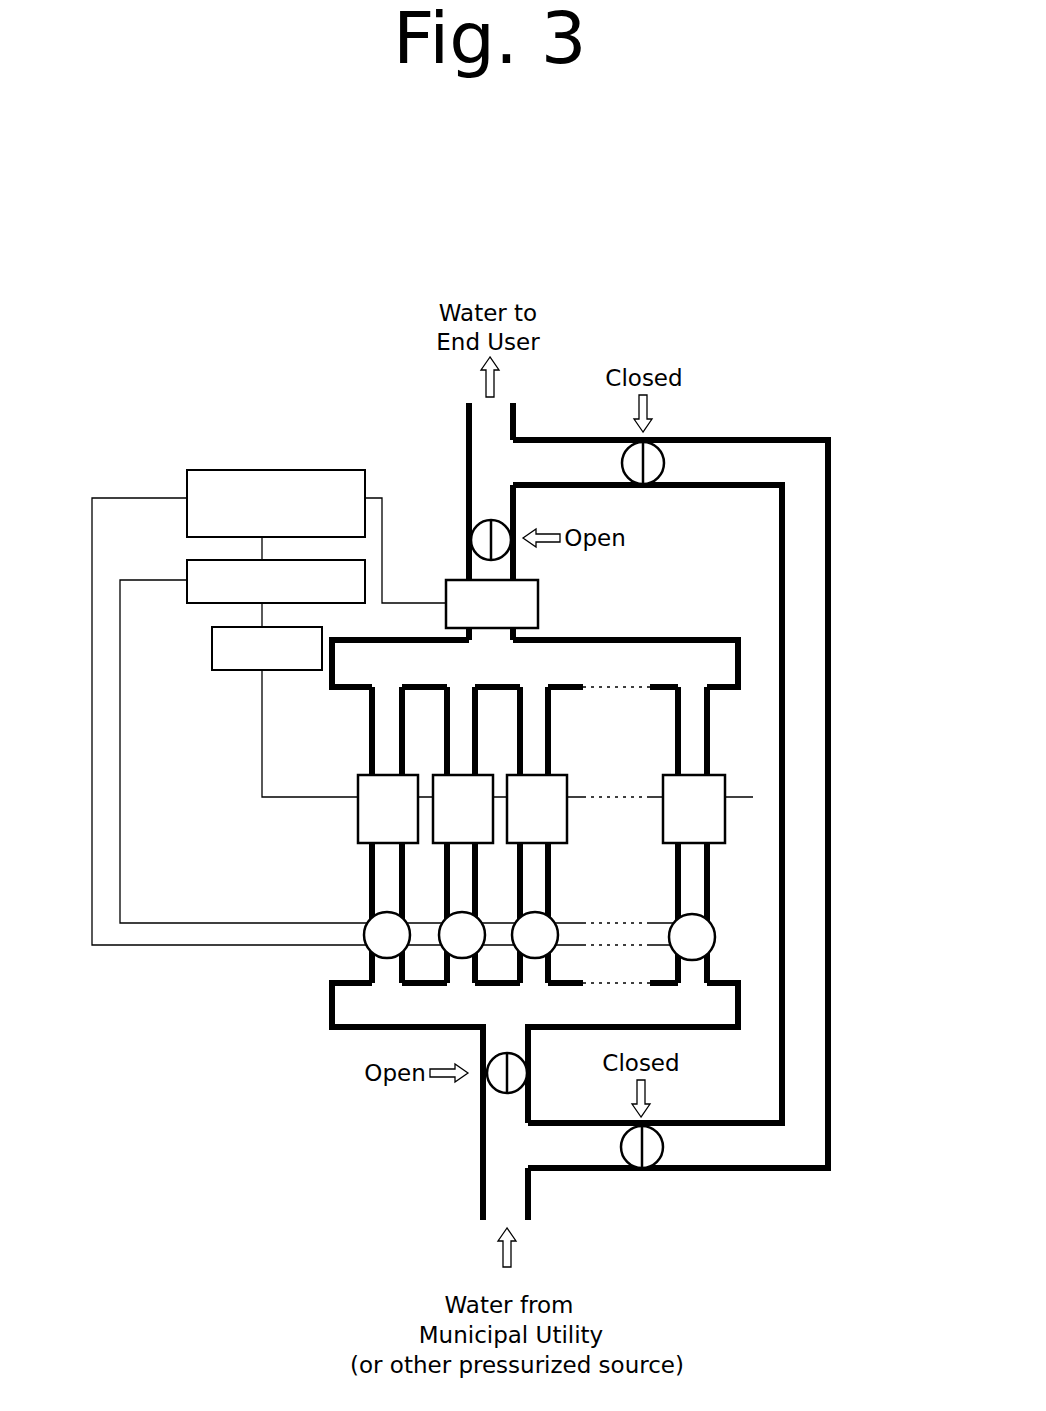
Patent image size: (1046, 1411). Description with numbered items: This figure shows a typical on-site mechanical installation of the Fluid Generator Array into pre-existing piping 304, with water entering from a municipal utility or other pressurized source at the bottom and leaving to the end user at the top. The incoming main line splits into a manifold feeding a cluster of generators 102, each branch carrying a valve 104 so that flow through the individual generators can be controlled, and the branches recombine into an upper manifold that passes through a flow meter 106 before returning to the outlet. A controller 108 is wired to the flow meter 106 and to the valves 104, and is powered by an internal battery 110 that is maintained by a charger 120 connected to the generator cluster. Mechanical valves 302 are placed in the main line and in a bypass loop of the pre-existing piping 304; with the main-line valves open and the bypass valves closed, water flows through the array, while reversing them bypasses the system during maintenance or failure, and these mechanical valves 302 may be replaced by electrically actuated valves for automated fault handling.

The generators 102 is at (348, 827).
The valves 104 is at (357, 953).
The flow meter 106 is at (540, 608).
The controller 108 is at (275, 462).
The internal battery 110 is at (203, 612).
The charger 120 is at (240, 678).
The mechanical valves 302 is at (457, 542).
The pre-existing piping 304 is at (775, 1178).